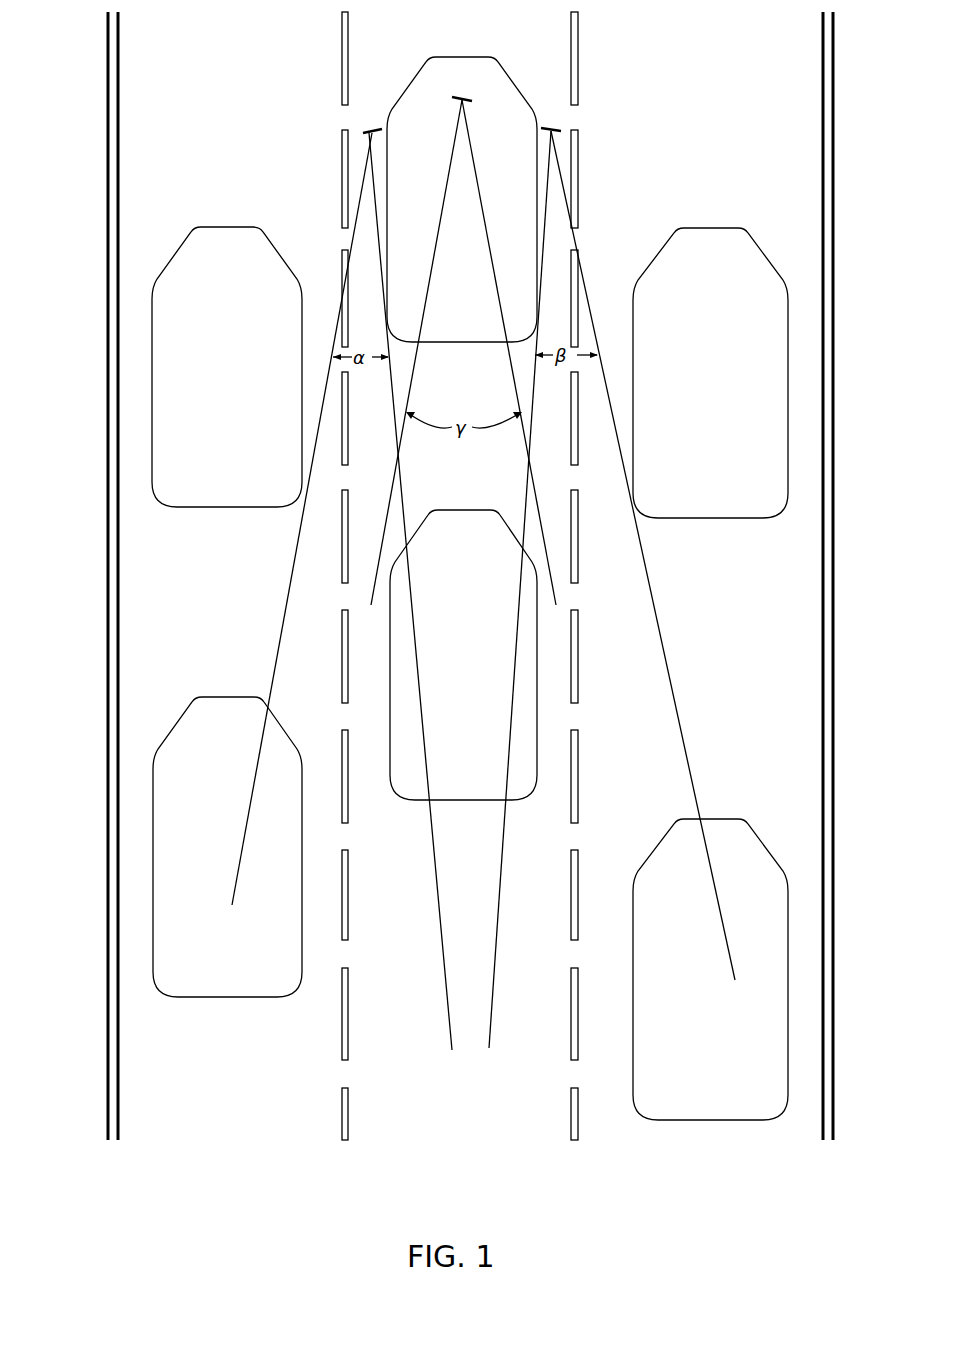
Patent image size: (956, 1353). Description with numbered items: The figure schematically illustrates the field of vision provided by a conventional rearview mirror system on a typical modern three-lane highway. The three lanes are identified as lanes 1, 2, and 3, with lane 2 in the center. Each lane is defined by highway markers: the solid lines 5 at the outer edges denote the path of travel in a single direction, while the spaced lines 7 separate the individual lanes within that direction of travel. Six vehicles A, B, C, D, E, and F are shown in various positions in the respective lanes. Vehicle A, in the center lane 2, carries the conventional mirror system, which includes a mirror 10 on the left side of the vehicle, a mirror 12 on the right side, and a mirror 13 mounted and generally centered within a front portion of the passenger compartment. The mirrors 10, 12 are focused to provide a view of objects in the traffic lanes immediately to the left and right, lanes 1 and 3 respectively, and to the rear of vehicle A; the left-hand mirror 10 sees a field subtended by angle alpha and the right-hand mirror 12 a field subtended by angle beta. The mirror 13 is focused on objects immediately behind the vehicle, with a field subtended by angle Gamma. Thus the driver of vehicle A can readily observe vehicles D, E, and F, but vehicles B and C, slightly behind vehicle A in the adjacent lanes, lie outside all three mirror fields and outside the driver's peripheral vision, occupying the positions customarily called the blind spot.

The lane 1 is at (230, 576).
The lane 2 is at (460, 576).
The lane 3 is at (700, 576).
The solid lines 5 is at (112, 38).
The spaced lines 7 is at (341, 38).
The mirror 10 is at (366, 126).
The mirror 12 is at (557, 125).
The mirror 13 is at (460, 97).
The vehicle A is at (462, 199).
The vehicle B is at (227, 367).
The vehicle C is at (710, 373).
The vehicle D is at (463, 655).
The vehicle E is at (227, 847).
The vehicle F is at (710, 969).